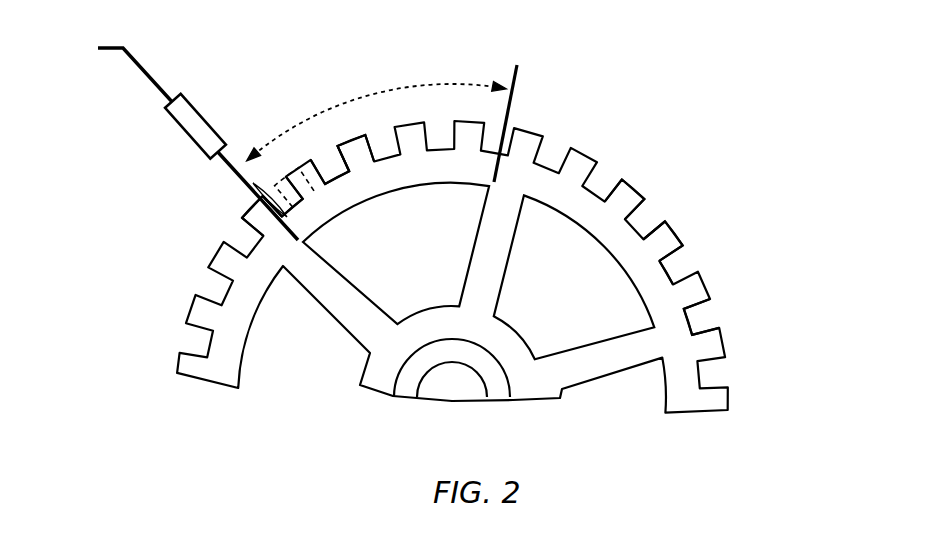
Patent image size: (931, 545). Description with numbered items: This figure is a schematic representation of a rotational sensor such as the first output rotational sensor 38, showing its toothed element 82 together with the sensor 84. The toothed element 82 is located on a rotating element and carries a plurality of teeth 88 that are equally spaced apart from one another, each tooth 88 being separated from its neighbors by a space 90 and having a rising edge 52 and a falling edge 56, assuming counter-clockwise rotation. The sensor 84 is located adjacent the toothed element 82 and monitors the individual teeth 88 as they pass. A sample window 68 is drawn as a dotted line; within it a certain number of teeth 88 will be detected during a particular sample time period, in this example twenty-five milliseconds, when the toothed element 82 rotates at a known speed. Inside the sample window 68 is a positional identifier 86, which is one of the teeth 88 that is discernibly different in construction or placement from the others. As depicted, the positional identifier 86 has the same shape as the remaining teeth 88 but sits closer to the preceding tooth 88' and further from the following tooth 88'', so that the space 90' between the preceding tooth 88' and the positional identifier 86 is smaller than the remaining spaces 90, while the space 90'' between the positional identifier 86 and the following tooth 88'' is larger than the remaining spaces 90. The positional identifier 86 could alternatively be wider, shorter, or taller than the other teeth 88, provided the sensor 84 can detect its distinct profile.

The first output rotational sensor 38 is at (703, 191).
The rising edge 52 is at (662, 228).
The falling edge 56 is at (676, 256).
The sample window 68 is at (467, 84).
The toothed element 82 is at (634, 182).
The sensor 84 is at (204, 112).
The positional identifier 86 is at (276, 183).
The tooth 88 is at (708, 223).
The preceding tooth 88' is at (215, 215).
The following tooth 88'' is at (372, 115).
The space 90 is at (738, 308).
The space between preceding tooth and positional identifier 90' is at (236, 191).
The space between positional identifier and following tooth 90'' is at (319, 111).